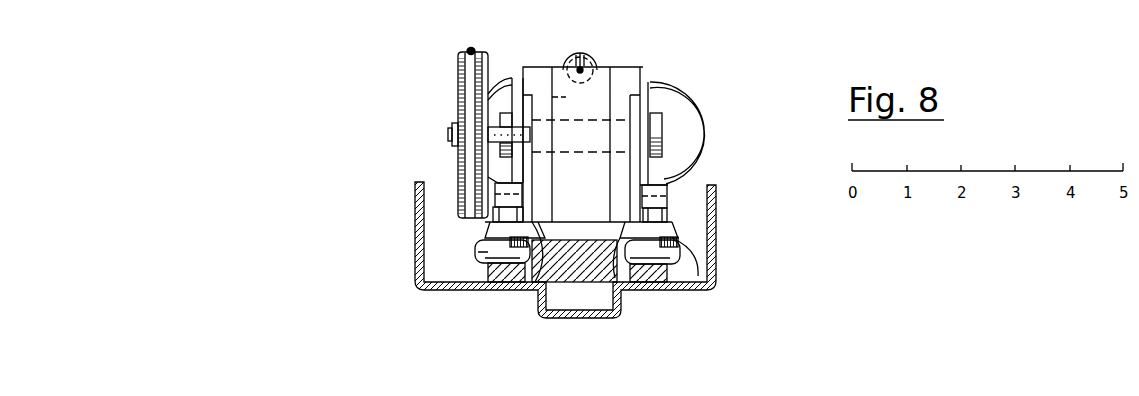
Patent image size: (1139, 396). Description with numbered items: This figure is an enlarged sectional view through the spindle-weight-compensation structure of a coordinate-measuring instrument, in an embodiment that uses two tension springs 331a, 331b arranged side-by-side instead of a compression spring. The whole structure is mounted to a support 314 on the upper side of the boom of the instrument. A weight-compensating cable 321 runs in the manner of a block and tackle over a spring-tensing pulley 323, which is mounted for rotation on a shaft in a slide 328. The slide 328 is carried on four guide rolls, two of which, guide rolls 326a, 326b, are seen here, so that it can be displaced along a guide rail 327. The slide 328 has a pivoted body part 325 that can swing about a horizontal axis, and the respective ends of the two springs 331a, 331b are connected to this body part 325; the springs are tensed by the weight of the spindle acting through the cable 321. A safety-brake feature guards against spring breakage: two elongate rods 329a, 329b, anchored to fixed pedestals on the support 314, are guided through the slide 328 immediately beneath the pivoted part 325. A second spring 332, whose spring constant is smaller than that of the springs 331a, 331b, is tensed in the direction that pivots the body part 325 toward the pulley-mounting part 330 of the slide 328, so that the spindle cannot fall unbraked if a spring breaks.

The support 314 is at (415, 200).
The weight-compensating cable 321 is at (490, 224).
The spring-tensing pulley 323 is at (458, 102).
The pivoted body part 325 is at (628, 80).
The guide roll 326a is at (478, 250).
The guide roll 326b is at (688, 276).
The guide rail 327 is at (566, 280).
The slide 328 is at (670, 228).
The elongate rod 329a is at (522, 284).
The elongate rod 329b is at (640, 285).
The pulley-mounting part 330 is at (583, 182).
The tension spring 331a is at (677, 93).
The tension spring 331b is at (500, 80).
The second spring 332 is at (585, 60).